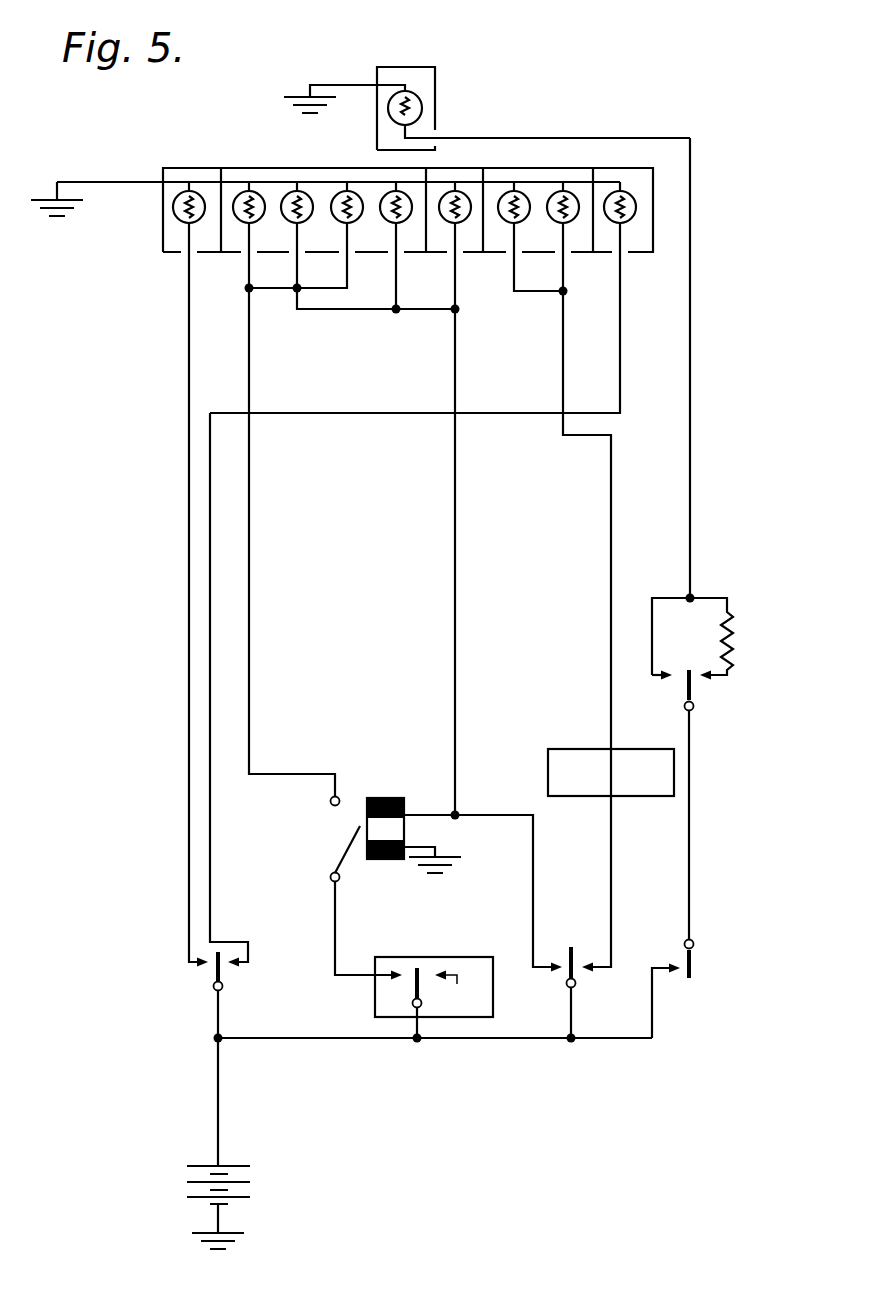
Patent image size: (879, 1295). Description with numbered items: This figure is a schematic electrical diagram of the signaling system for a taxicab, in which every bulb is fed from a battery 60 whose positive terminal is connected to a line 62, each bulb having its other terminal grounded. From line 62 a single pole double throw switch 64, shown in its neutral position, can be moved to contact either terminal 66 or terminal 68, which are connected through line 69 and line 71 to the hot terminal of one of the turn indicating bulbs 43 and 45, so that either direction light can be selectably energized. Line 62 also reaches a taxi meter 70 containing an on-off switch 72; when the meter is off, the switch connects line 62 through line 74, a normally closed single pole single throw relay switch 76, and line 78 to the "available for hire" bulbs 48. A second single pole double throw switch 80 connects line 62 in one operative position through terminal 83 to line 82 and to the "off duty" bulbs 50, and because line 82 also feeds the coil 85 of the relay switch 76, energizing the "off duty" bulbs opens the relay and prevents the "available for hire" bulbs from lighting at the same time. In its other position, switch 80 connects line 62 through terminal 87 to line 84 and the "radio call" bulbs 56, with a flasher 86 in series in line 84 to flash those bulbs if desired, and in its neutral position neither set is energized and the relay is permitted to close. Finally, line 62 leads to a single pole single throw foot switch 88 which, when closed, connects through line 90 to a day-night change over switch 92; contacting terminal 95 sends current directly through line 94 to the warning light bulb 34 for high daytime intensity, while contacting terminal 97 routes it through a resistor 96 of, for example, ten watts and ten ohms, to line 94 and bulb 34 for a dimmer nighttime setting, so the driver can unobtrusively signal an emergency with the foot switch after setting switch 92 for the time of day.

The warning light bulb 34 is at (425, 110).
The turn indicating bulb 43 is at (172, 206).
The turn indicating bulb 45 is at (636, 208).
The "available for hire" bulbs 48 is at (236, 193).
The "off duty" bulbs 50 is at (294, 193).
The "radio call" bulbs 56 is at (558, 195).
The battery 60 is at (250, 1181).
The line 62 is at (470, 1042).
The single pole double throw switch 64 is at (213, 978).
The terminal 66 is at (200, 966).
The terminal 68 is at (237, 966).
The line 69 is at (187, 699).
The taxi meter 70 is at (470, 957).
The line 71 is at (212, 652).
The on-off switch 72 is at (414, 965).
The line 74 is at (337, 912).
The relay switch 76 is at (358, 829).
The line 78 is at (250, 571).
The single pole double throw switch 80 is at (574, 947).
The line 82 is at (535, 869).
The terminal 83 is at (560, 981).
The line 84 is at (611, 881).
The coil 85 is at (383, 797).
The flasher 86 is at (600, 748).
The terminal 87 is at (588, 974).
The foot switch 88 is at (694, 961).
The line 90 is at (690, 883).
The day-night change over switch 92 is at (692, 700).
The line 94 is at (690, 523).
The terminal 95 is at (669, 686).
The resistor 96 is at (730, 642).
The terminal 97 is at (705, 683).